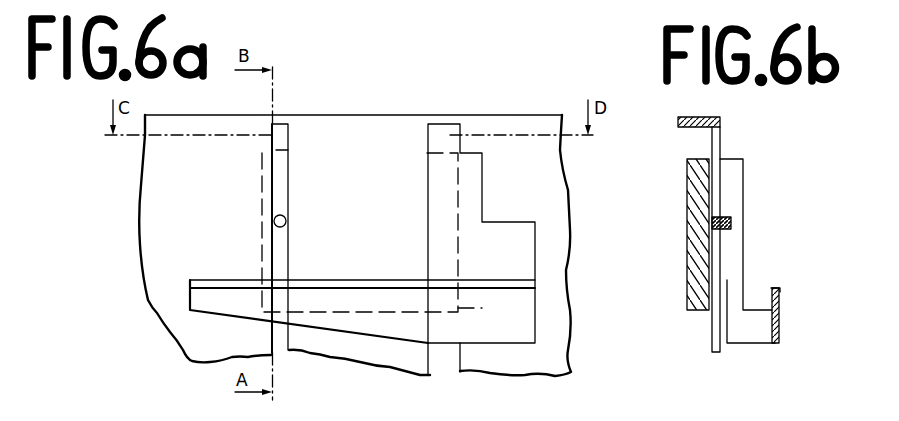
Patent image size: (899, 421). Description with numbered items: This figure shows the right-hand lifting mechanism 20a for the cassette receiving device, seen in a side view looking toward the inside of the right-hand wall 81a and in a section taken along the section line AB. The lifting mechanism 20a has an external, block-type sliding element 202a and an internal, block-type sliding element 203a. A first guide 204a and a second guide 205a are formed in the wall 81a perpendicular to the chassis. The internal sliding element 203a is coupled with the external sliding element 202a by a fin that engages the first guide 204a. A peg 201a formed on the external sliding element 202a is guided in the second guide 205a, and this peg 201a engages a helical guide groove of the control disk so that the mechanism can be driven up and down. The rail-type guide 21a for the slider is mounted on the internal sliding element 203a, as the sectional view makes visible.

In FIG. 6A, the right-hand wall 81a is at (162, 185).
In FIG. 6B, the right-hand wall 81a is at (700, 117).
In FIG. 6A, the second guide 205a is at (278, 146).
In FIG. 6B, the second guide 205a is at (716, 239).
In FIG. 6A, the lifting mechanism 20a is at (378, 153).
In FIG. 6B, the lifting mechanism 20a is at (745, 178).
In FIG. 6A, the peg 201a is at (284, 216).
In FIG. 6B, the peg 201a is at (731, 223).
In FIG. 6A, the internal sliding element 203a is at (483, 237).
In FIG. 6B, the internal sliding element 203a is at (738, 334).
In FIG. 6A, the first guide 204a is at (445, 358).
In FIG. 6A, the rail-type guide 21a is at (190, 297).
In FIG. 6B, the rail-type guide 21a is at (780, 294).
In FIG. 6B, the external sliding element 202a is at (695, 311).